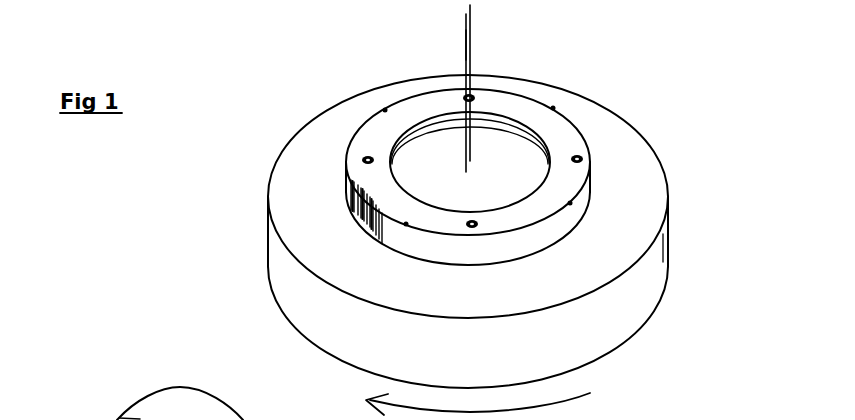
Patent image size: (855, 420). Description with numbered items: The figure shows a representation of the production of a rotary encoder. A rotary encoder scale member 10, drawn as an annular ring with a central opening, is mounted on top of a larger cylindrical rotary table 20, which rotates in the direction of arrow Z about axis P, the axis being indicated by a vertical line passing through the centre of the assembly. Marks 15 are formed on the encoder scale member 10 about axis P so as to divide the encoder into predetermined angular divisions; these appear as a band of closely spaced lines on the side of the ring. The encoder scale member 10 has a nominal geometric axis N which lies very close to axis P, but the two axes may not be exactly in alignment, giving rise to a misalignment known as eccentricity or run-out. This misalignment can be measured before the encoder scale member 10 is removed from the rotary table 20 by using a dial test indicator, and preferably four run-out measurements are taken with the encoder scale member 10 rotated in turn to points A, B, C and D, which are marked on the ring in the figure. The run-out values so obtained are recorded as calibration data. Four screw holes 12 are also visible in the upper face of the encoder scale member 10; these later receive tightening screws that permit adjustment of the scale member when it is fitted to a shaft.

The rotary encoder scale member 10 is at (417, 107).
The screw holes 12 is at (478, 96).
The marks 15 is at (350, 213).
The rotary table 20 is at (345, 117).
The nominal geometric axis N is at (471, 40).
The axis P is at (464, 50).
The point A is at (554, 106).
The point B is at (571, 204).
The point C is at (406, 226).
The point D is at (384, 109).
The arrow Z is at (478, 403).